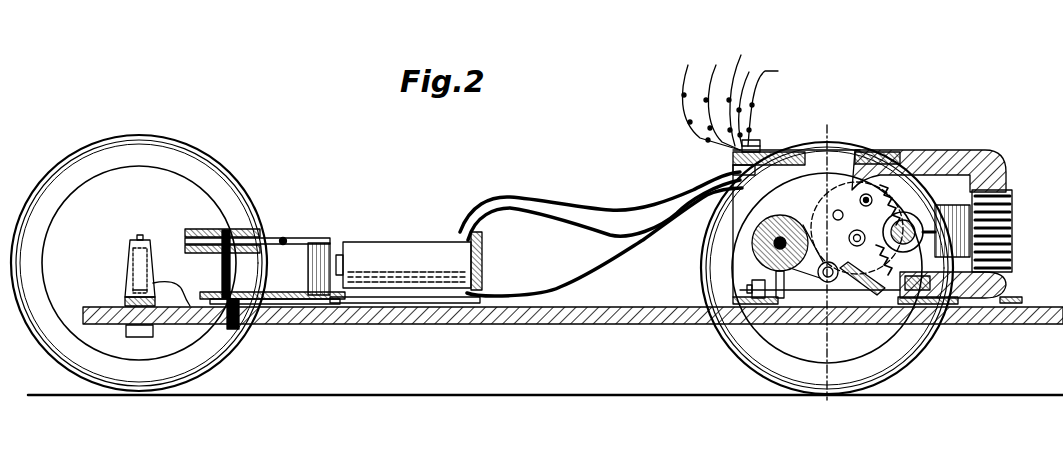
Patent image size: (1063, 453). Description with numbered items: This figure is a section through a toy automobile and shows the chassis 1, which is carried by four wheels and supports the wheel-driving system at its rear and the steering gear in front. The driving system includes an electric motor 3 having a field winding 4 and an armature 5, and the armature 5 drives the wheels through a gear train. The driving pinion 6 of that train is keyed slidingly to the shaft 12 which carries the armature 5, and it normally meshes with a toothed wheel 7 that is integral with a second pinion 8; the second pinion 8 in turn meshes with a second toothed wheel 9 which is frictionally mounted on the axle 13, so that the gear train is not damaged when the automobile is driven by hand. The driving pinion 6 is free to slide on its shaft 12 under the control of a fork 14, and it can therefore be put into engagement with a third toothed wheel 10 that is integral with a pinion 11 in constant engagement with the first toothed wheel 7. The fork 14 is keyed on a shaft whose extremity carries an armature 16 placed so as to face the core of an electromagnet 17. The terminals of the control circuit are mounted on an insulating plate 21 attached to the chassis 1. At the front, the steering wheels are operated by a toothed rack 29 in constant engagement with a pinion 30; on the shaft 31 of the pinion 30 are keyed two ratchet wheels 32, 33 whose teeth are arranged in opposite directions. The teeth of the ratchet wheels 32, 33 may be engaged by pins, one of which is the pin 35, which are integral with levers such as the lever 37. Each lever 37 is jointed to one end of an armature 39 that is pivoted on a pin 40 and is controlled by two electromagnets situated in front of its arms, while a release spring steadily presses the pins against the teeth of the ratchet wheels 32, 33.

The chassis 1 is at (556, 326).
The electric motor 3 is at (952, 220).
The field winding 4 is at (1012, 205).
The armature 5 is at (985, 187).
The driving pinion 6 is at (923, 210).
The toothed wheel 7 is at (832, 184).
The second pinion 8 is at (833, 213).
The second toothed wheel 9 is at (784, 300).
The third toothed wheel 10 is at (840, 168).
The pinion 11 is at (868, 160).
The shaft 12 is at (915, 258).
The axle 13 is at (838, 300).
The fork 14 is at (962, 286).
The armature 16 is at (740, 268).
The electromagnet 17 is at (762, 220).
The insulating plate 21 is at (780, 150).
The toothed rack 29 is at (250, 312).
The pinion 30 is at (236, 312).
The shaft 31 is at (222, 268).
The ratchet wheel 32 is at (190, 253).
The ratchet wheel 33 is at (213, 243).
The pin 35 is at (197, 229).
The lever 37 is at (330, 240).
The armature 39 is at (335, 252).
The pin 40 is at (312, 280).